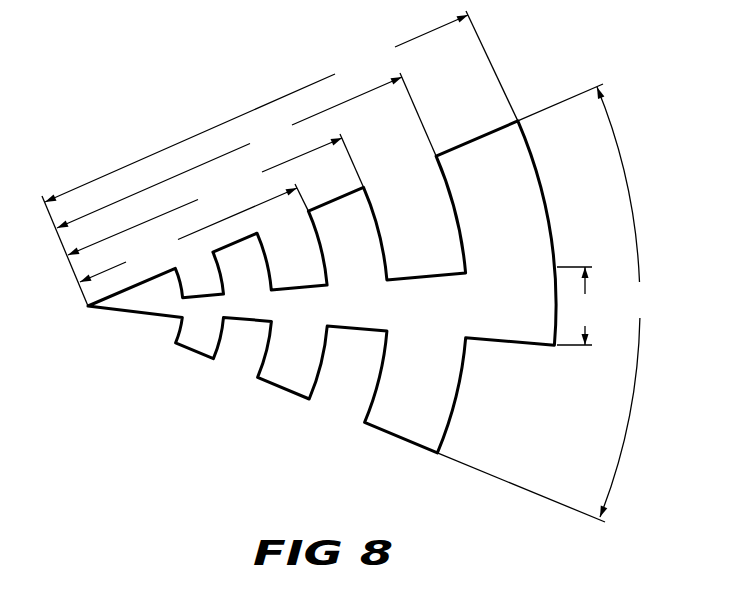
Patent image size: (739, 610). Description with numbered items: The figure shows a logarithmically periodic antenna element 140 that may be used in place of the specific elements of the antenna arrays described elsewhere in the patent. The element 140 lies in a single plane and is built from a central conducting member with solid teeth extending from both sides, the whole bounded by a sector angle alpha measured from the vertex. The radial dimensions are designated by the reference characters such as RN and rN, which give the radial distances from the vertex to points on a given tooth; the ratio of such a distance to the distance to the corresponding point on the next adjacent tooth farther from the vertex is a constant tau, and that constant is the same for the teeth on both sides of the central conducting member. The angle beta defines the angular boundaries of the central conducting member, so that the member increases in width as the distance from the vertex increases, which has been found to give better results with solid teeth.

The stepped sector element 140 is at (496, 333).
The radial dimension RN is at (281, 106).
The radial dimension rN is at (246, 150).